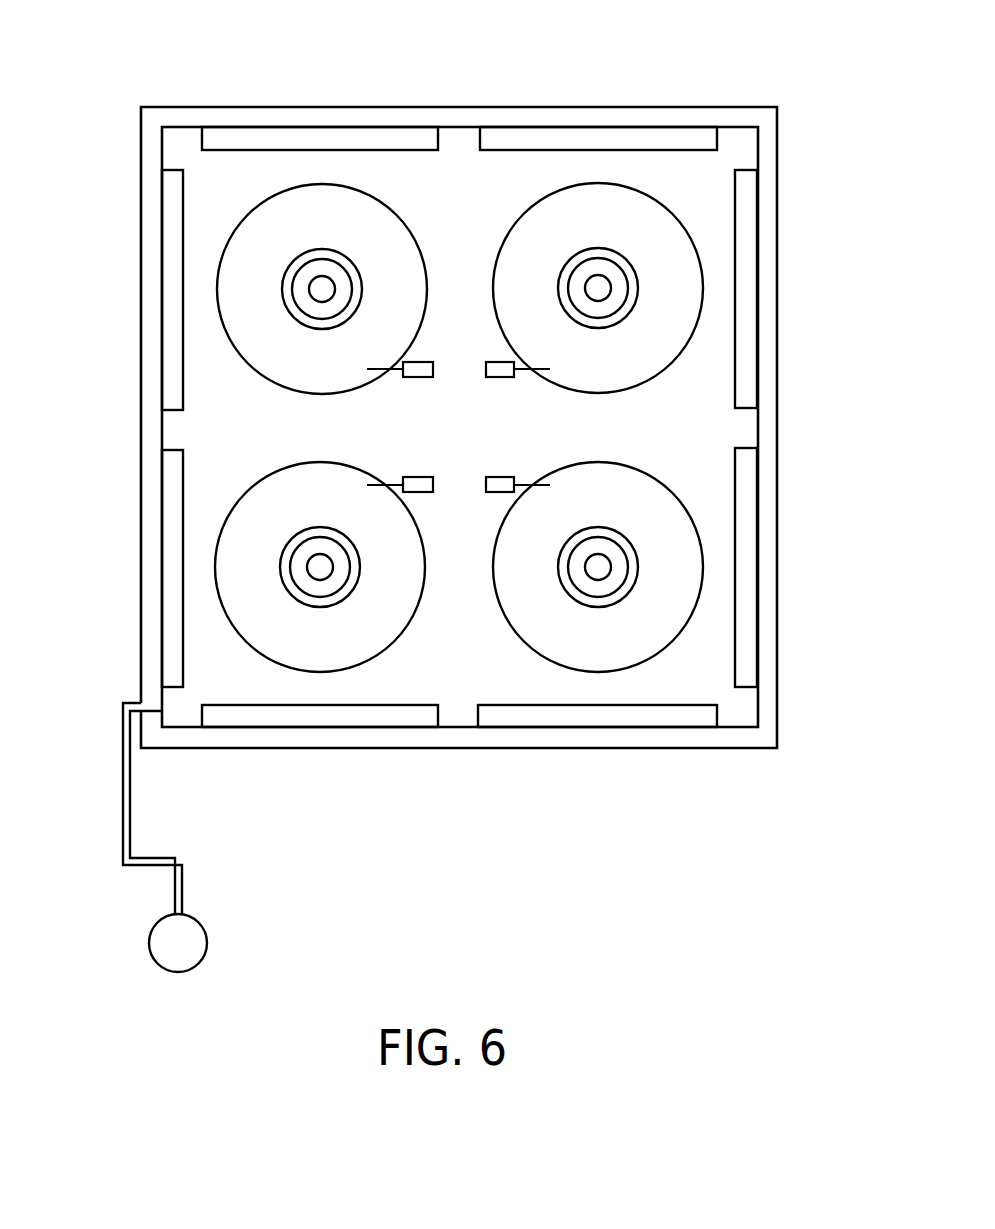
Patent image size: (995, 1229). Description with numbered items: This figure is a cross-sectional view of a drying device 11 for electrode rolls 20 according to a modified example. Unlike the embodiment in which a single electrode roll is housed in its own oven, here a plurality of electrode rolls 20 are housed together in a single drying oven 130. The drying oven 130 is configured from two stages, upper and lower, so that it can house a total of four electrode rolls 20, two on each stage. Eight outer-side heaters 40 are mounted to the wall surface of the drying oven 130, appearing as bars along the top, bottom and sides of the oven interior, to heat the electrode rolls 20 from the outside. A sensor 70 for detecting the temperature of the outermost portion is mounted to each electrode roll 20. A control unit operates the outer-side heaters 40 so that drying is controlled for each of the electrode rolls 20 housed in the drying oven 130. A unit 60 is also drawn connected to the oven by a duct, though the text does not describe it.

The drying device 11 is at (171, 27).
The drying oven 130 is at (658, 120).
The outer-side heater 40 is at (502, 135).
The electrode roll 20 is at (390, 199).
The sensor 70 is at (423, 362).
The fan / cooling unit 60 is at (197, 935).